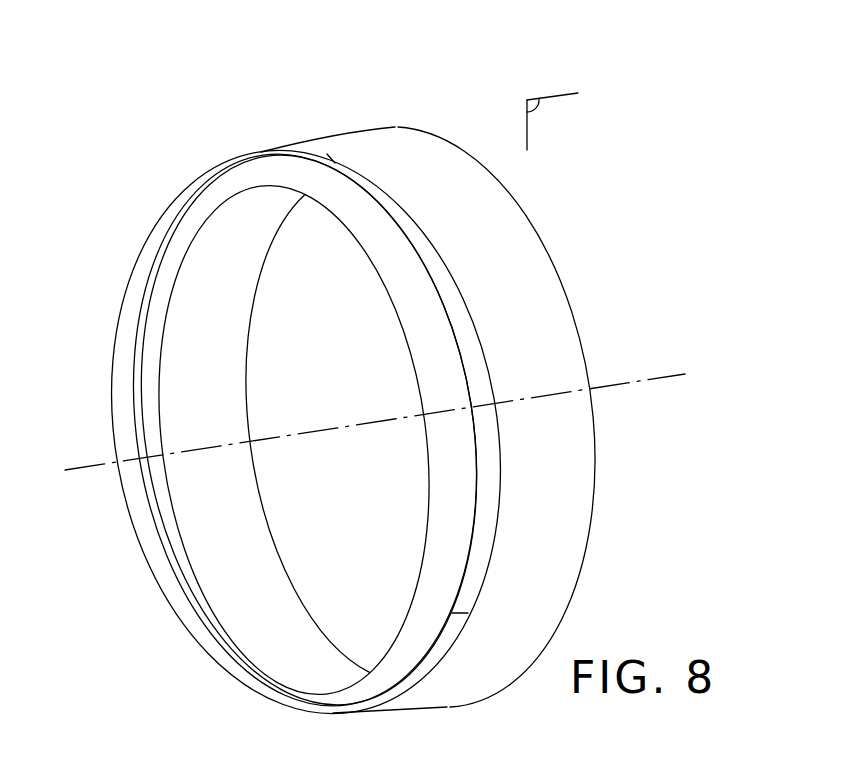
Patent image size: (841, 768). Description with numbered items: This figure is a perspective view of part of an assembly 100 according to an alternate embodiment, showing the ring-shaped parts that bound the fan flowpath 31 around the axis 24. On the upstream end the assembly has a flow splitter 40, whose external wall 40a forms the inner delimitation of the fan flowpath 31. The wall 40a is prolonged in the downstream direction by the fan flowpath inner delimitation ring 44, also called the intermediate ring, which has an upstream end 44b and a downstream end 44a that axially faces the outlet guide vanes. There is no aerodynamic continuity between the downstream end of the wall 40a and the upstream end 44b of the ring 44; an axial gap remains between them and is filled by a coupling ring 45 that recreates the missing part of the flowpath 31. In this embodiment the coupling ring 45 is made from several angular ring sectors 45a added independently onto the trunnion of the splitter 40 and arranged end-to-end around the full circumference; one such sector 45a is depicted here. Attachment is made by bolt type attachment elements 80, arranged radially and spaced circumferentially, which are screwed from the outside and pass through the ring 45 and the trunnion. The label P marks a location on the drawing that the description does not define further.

The assembly 100 is at (372, 389).
The fan flowpath inner delimitation ring 44 is at (449, 417).
The downstream end 44a is at (415, 202).
The upstream end 44b is at (487, 183).
The coupling ring 45 is at (305, 399).
The ring sector 45a is at (366, 172).
The flow splitter 40 is at (294, 440).
The external wall 40a is at (340, 220).
The bolt type attachment elements 80 is at (473, 348).
The fan flowpath 31 is at (560, 466).
The axis 24 is at (653, 378).
The plane P is at (526, 104).